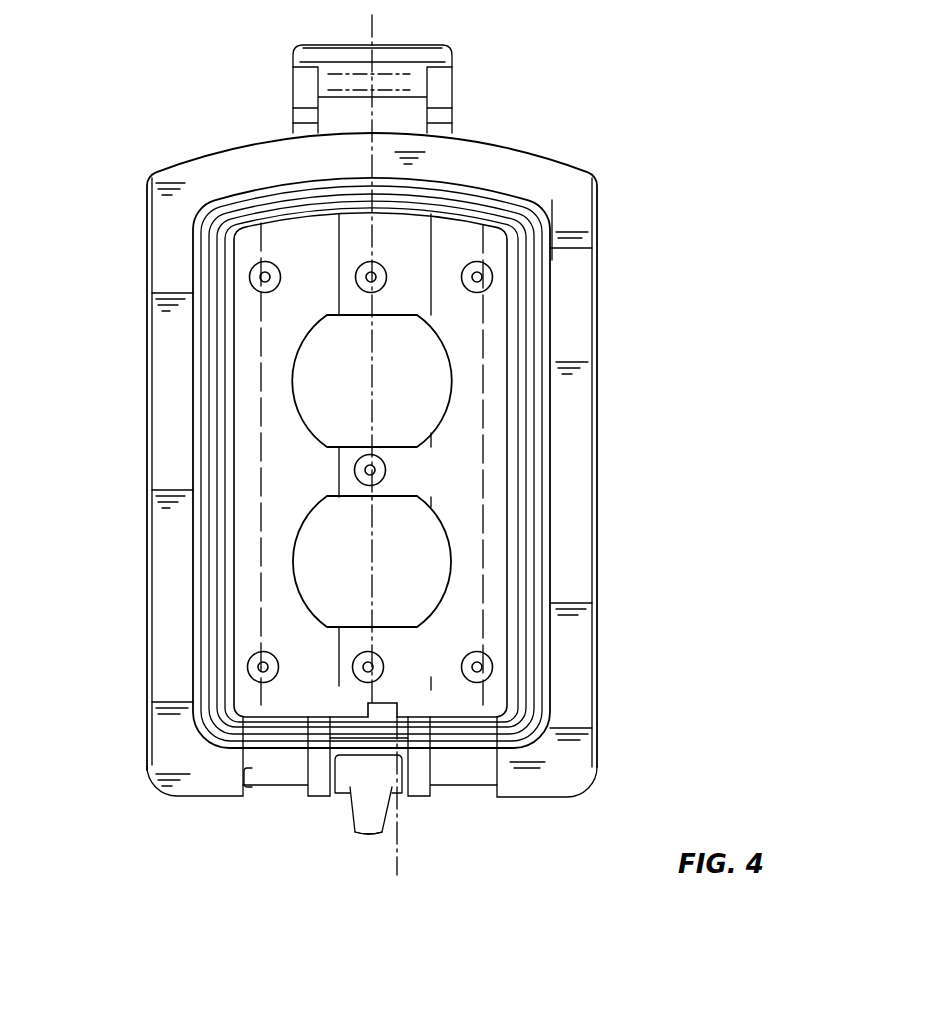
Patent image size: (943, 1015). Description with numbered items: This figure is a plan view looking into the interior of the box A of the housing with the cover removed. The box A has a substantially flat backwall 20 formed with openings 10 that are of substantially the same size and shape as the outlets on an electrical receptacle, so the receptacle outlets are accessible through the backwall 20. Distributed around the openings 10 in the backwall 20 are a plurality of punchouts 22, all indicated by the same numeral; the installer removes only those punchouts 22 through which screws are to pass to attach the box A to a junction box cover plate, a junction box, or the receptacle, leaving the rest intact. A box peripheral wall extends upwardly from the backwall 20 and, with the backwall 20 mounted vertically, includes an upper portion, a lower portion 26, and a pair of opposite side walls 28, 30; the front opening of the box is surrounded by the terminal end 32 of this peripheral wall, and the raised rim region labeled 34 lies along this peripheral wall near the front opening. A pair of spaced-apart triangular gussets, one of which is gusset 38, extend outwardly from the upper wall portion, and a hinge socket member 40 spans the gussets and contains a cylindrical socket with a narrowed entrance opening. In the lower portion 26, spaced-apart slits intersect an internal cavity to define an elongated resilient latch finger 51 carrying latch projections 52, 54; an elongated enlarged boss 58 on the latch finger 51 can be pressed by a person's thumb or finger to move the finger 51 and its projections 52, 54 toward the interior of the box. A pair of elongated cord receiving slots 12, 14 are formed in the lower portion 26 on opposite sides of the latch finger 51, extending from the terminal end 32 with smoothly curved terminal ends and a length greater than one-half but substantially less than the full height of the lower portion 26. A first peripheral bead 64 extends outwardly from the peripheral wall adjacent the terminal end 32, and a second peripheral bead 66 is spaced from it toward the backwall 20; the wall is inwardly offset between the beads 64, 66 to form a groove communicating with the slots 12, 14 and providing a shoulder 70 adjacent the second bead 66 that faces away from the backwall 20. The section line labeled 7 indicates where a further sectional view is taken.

The openings 10 is at (418, 355).
The cord receiving slot 12 is at (250, 774).
The cord receiving slot 14 is at (497, 777).
The backwall 20 is at (493, 398).
The punchouts 22 is at (262, 280).
The lower portion 26 is at (258, 790).
The side wall 28 is at (145, 522).
The side wall 30 is at (597, 468).
The terminal end 32 is at (458, 198).
The raised frame 34 is at (478, 138).
The triangular gusset 38 is at (453, 88).
The hinge socket member 40 is at (396, 44).
The latch finger 51 is at (338, 773).
The latch projection 52 is at (338, 797).
The latch projection 54 is at (395, 797).
The boss 58 is at (373, 832).
The first peripheral bead 64 is at (555, 248).
The second peripheral bead 66 is at (594, 175).
The shoulder 70 is at (571, 200).
The section line 7- 7 is at (372, 15).
The box A is at (132, 320).